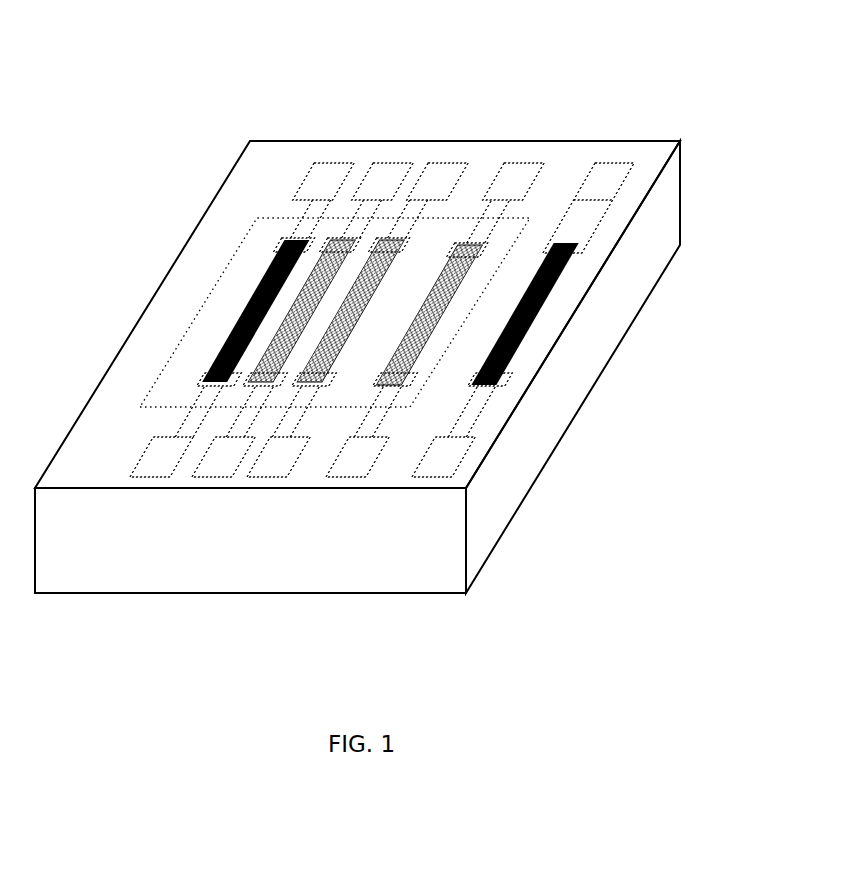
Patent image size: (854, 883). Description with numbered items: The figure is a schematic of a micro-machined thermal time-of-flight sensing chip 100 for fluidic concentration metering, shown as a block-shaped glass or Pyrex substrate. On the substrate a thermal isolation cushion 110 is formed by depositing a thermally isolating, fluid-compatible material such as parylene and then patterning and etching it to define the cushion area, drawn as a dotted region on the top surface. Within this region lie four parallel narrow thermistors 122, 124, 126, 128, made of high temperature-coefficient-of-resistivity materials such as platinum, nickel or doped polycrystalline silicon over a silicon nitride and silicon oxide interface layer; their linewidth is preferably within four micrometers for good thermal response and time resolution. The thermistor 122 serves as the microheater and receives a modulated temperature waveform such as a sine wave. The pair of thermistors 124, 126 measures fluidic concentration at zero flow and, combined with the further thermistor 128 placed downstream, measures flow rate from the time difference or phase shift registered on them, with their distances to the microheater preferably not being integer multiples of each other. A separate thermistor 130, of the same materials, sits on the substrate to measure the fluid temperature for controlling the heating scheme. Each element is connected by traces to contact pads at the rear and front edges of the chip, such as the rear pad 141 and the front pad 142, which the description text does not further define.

The sensing chip 100 is at (543, 410).
The thermal isolation cushion 110 is at (238, 275).
The thermistor 122 is at (282, 250).
The thermistor 124 is at (330, 258).
The thermistor 126 is at (385, 258).
The thermistor 128 is at (458, 268).
The thermistor 130 is at (533, 303).
The rear contact pad 141 is at (518, 177).
The front contact pad 142 is at (435, 465).